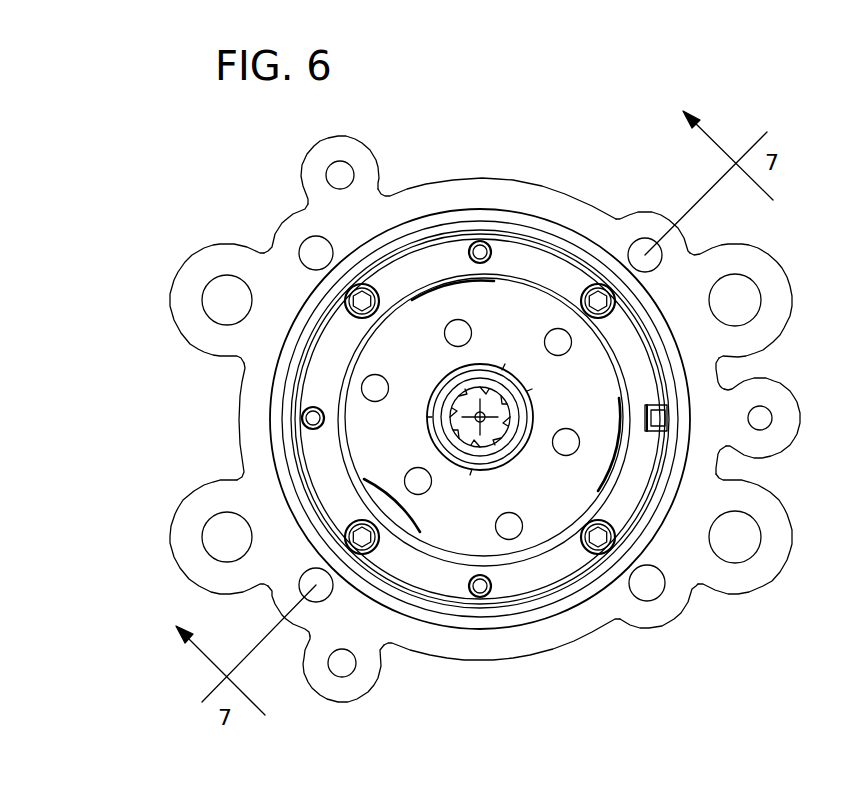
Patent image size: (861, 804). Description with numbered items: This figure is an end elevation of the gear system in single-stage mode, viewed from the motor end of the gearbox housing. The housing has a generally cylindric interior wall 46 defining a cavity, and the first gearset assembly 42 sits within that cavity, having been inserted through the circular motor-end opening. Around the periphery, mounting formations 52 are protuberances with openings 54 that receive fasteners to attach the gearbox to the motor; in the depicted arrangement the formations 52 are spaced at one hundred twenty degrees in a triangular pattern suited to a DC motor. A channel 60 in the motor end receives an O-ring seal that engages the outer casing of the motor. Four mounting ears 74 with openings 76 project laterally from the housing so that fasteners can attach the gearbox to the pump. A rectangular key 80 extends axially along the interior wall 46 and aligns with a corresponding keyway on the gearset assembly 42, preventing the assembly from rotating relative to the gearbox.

The first gearset assembly 42 is at (524, 550).
The interior wall 46 is at (630, 485).
The mounting formations 52 is at (366, 140).
The openings 54 is at (354, 172).
The channel 60 is at (520, 180).
The mounting ears 74 is at (202, 247).
The openings 76 is at (206, 286).
The rectangular key 80 is at (645, 416).